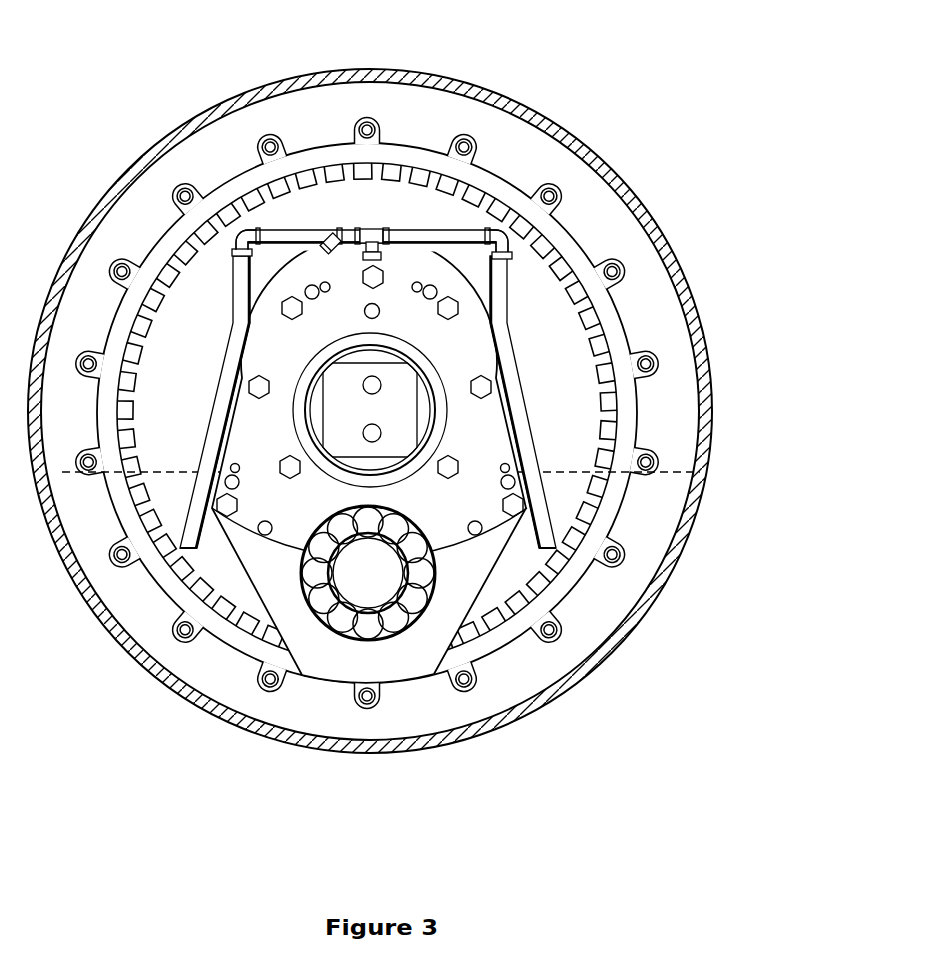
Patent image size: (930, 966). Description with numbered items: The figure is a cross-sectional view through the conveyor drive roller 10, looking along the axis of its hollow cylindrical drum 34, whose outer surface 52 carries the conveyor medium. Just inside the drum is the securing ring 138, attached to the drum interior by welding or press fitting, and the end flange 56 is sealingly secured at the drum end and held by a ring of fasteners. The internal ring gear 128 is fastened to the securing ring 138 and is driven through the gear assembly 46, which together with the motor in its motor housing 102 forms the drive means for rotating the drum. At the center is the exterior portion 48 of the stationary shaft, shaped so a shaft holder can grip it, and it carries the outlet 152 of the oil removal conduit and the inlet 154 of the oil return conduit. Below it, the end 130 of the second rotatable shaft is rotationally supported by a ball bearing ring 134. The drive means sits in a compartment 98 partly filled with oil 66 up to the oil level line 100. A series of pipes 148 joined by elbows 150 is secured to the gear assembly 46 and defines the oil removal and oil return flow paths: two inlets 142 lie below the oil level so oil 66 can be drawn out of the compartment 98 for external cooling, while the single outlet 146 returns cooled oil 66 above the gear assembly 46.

The conveyor drive roller 10 is at (603, 88).
The cylindrical drum 34 is at (229, 99).
The gear assembly 46 is at (266, 453).
The exterior portion of stationary shaft 48 is at (406, 424).
The outer surface 52 is at (388, 70).
The end flange 56 is at (384, 120).
The oil 66 is at (512, 676).
The compartment 98 is at (581, 626).
The oil level line 100 is at (660, 478).
The motor housing 102 is at (583, 445).
The internal ring gear 128 is at (630, 426).
The end of second rotatable shaft 130 is at (389, 586).
The ball bearing ring 134 is at (343, 530).
The securing ring 138 is at (664, 265).
The inlet 142 is at (182, 547).
The outlet 146 is at (325, 250).
The pipes 148 is at (440, 236).
The elbows 150 is at (240, 242).
The outlet of oil removal conduit 152 is at (381, 435).
The inlet of oil return conduit 154 is at (380, 383).